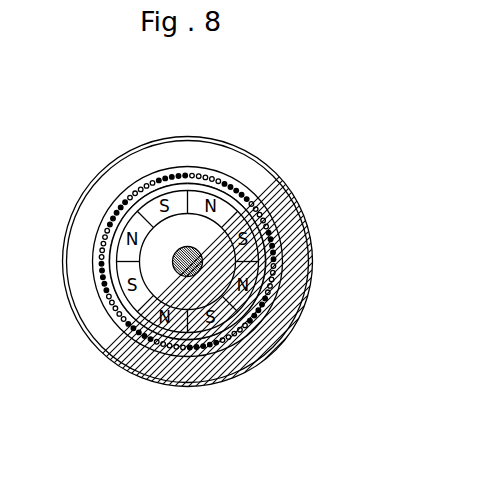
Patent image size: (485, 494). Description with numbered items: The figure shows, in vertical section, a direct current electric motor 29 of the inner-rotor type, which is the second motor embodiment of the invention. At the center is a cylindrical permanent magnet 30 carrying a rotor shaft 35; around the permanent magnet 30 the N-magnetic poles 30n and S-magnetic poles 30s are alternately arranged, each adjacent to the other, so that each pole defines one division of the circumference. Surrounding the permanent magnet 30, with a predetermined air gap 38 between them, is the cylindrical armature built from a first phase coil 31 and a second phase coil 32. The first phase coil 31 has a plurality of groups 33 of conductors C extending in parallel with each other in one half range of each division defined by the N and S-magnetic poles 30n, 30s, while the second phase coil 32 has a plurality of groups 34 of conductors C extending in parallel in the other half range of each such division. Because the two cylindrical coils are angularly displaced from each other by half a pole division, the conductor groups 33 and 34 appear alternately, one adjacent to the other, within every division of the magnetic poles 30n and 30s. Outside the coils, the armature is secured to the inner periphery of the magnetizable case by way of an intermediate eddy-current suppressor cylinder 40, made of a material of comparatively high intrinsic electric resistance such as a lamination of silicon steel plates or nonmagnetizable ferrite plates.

The direct current electric motor 29 is at (212, 235).
The conductors C is at (202, 261).
The permanent magnet 30 is at (244, 212).
The air gap 38 is at (175, 177).
The first phase coil 31 is at (223, 173).
The N-magnetic pole 30n is at (230, 180).
The second phase coil 32 is at (266, 170).
The S-magnetic pole 30s is at (282, 237).
The eddy-current suppressor cylinder 40 is at (308, 268).
The groups of conductors 33 is at (277, 278).
The groups of conductors 34 is at (270, 307).
The rotor shaft 35 is at (201, 269).